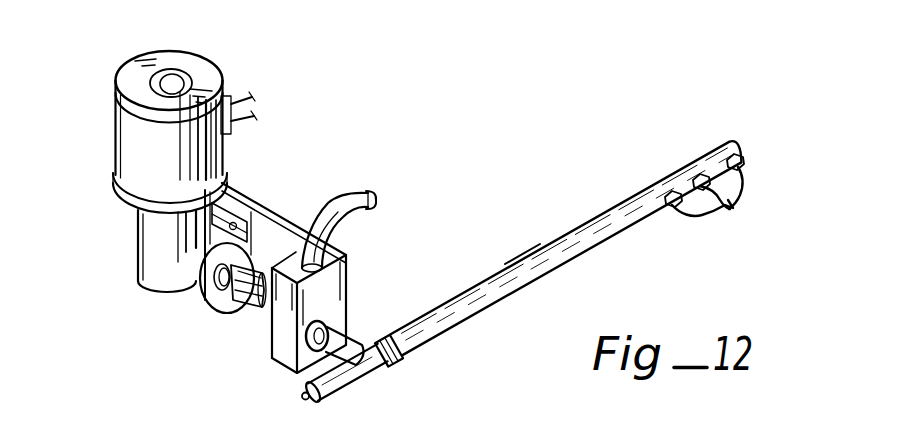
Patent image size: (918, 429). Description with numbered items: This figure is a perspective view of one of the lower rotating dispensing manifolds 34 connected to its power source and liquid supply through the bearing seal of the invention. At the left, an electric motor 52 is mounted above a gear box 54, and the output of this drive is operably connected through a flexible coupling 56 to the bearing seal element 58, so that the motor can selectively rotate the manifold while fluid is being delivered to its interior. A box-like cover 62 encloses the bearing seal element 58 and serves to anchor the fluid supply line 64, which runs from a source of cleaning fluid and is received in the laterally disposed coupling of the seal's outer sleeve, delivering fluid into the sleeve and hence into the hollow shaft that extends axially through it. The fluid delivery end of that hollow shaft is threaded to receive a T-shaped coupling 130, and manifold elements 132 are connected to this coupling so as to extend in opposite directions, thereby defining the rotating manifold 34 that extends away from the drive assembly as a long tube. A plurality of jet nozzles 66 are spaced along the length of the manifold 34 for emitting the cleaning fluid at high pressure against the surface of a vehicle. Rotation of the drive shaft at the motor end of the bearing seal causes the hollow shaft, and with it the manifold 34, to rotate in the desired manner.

The electric motor 52 is at (138, 137).
The gear box 54 is at (163, 244).
The flexible coupling 56 is at (235, 303).
The bearing seal element 58 is at (328, 314).
The box-like cover 62 is at (284, 333).
The fluid supply line 64 is at (342, 197).
The lower rotating manifold 34 is at (620, 212).
The jet nozzles 66 is at (716, 191).
The T-shaped coupling 130 is at (393, 365).
The manifold elements 132 is at (527, 267).